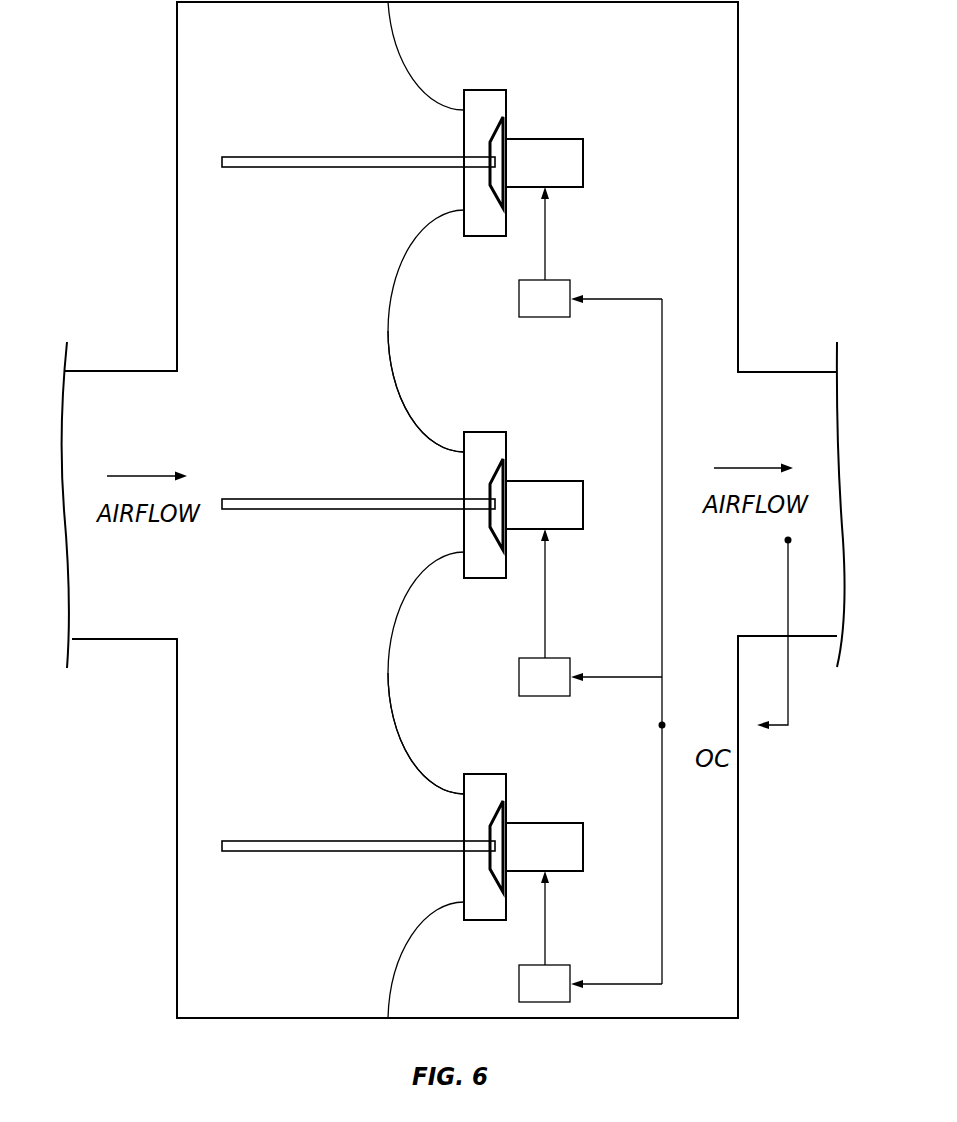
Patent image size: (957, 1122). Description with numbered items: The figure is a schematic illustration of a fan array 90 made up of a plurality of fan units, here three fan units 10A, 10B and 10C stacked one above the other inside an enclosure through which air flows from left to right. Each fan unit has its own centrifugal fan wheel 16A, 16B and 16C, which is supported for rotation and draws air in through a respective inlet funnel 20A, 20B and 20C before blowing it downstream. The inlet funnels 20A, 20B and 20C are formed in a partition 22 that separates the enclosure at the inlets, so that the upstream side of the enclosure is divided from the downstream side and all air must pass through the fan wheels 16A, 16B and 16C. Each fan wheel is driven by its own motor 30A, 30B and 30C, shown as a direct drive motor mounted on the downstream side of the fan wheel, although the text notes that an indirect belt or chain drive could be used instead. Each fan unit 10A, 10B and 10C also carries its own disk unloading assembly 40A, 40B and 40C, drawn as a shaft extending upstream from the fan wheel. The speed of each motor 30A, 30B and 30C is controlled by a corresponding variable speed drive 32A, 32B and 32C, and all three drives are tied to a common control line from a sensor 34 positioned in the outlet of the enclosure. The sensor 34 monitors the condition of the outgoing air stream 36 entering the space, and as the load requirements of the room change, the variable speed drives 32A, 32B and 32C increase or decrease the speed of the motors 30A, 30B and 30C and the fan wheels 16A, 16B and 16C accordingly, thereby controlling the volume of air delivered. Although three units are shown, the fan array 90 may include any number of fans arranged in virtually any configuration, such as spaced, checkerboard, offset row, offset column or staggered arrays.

The fan unit 10A is at (424, 155).
The fan unit 10B is at (419, 492).
The fan unit 10C is at (431, 839).
The fan wheel 16A is at (485, 238).
The fan wheel 16B is at (485, 580).
The fan wheel 16C is at (485, 922).
The inlet funnel 20A is at (413, 78).
The inlet funnel 20B is at (412, 418).
The inlet funnel 20C is at (412, 760).
The partition 22 is at (387, 332).
The motor 30A is at (545, 139).
The motor 30B is at (545, 481).
The motor 30C is at (543, 817).
The variable speed drive 32A is at (557, 280).
The variable speed drive 32B is at (559, 658).
The variable speed drive 32C is at (557, 965).
The sensor 34 is at (786, 541).
The outgoing air stream 36 is at (812, 622).
The disk unloading assembly 40A is at (389, 168).
The disk unloading assembly 40B is at (389, 510).
The disk unloading assembly 40C is at (389, 852).
The fan array 90 is at (741, 337).